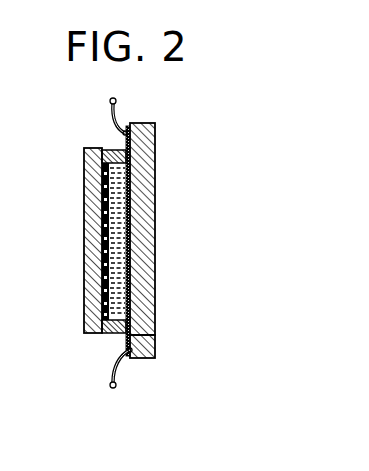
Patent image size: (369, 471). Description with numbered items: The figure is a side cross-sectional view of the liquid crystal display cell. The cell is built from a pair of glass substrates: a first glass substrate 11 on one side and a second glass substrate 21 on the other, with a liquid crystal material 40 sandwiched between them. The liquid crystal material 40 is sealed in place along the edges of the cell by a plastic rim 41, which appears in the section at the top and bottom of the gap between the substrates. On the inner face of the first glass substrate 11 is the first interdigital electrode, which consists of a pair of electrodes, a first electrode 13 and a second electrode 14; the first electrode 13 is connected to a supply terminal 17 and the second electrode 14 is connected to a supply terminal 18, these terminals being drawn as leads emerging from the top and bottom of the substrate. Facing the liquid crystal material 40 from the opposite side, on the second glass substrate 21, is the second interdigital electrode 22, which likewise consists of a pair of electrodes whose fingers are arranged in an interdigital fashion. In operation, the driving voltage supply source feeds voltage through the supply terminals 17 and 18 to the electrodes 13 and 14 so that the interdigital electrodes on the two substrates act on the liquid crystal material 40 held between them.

The first glass substrate 11 is at (153, 228).
The first electrode 13 is at (132, 277).
The second electrode 14 is at (155, 343).
The supply terminal 17 is at (116, 101).
The supply terminal 18 is at (116, 385).
The second glass substrate 21 is at (85, 269).
The second interdigital electrode 22 is at (105, 233).
The liquid crystal material 40 is at (122, 179).
The plastic rim 41 is at (122, 151).